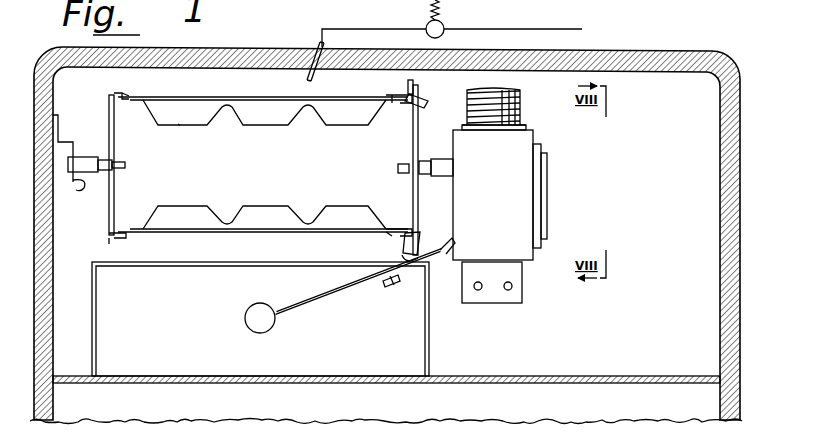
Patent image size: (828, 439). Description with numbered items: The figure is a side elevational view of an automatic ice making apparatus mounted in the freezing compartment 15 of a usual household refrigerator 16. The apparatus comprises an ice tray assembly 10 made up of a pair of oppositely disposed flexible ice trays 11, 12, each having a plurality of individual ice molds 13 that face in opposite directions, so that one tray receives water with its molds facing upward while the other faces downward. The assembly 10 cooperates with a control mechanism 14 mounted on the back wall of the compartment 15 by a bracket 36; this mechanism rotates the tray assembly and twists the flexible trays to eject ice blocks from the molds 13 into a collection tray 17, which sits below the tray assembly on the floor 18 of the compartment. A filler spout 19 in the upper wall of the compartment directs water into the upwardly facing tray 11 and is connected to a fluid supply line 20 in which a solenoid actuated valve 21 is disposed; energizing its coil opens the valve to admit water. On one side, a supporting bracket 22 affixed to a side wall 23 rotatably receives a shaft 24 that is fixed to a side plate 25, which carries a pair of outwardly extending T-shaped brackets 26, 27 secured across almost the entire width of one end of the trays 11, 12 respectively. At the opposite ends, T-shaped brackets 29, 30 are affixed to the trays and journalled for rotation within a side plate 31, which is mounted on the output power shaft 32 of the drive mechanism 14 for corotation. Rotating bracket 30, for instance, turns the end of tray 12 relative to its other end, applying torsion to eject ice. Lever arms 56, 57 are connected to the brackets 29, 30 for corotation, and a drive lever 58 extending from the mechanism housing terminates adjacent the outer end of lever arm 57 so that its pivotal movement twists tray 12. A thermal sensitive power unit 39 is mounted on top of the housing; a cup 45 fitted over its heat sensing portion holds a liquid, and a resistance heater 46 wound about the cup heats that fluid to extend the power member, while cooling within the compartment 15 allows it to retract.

The ice tray assembly 10 is at (428, 119).
The ice tray 11 is at (236, 92).
The ice tray 12 is at (210, 240).
The ice molds 13 is at (180, 126).
The control mechanism 14 is at (497, 186).
The freezing compartment 15 is at (630, 234).
The household refrigerator 16 is at (746, 215).
The collection tray 17 is at (180, 333).
The floor 18 is at (448, 376).
The filler spout 19 is at (315, 78).
The fluid supply line 20 is at (478, 29).
The solenoid actuated valve 21 is at (443, 18).
The supporting bracket 22 is at (77, 196).
The side wall 23 is at (47, 232).
The shaft 24 is at (86, 157).
The side plate 25 is at (114, 150).
The T-shaped bracket 26 is at (116, 93).
The T-shaped bracket 27 is at (112, 240).
The T-shaped bracket 29 is at (410, 104).
The T-shaped bracket 30 is at (410, 230).
The side plate 31 is at (412, 141).
The output power shaft 32 is at (405, 174).
The bracket 36 is at (522, 294).
The thermal sensitive power unit 39 is at (534, 122).
The cup 45 is at (520, 92).
The resistance heater 46 is at (520, 108).
The lever arm 56 is at (422, 90).
The lever arm 57 is at (400, 250).
The drive lever 58 is at (416, 276).